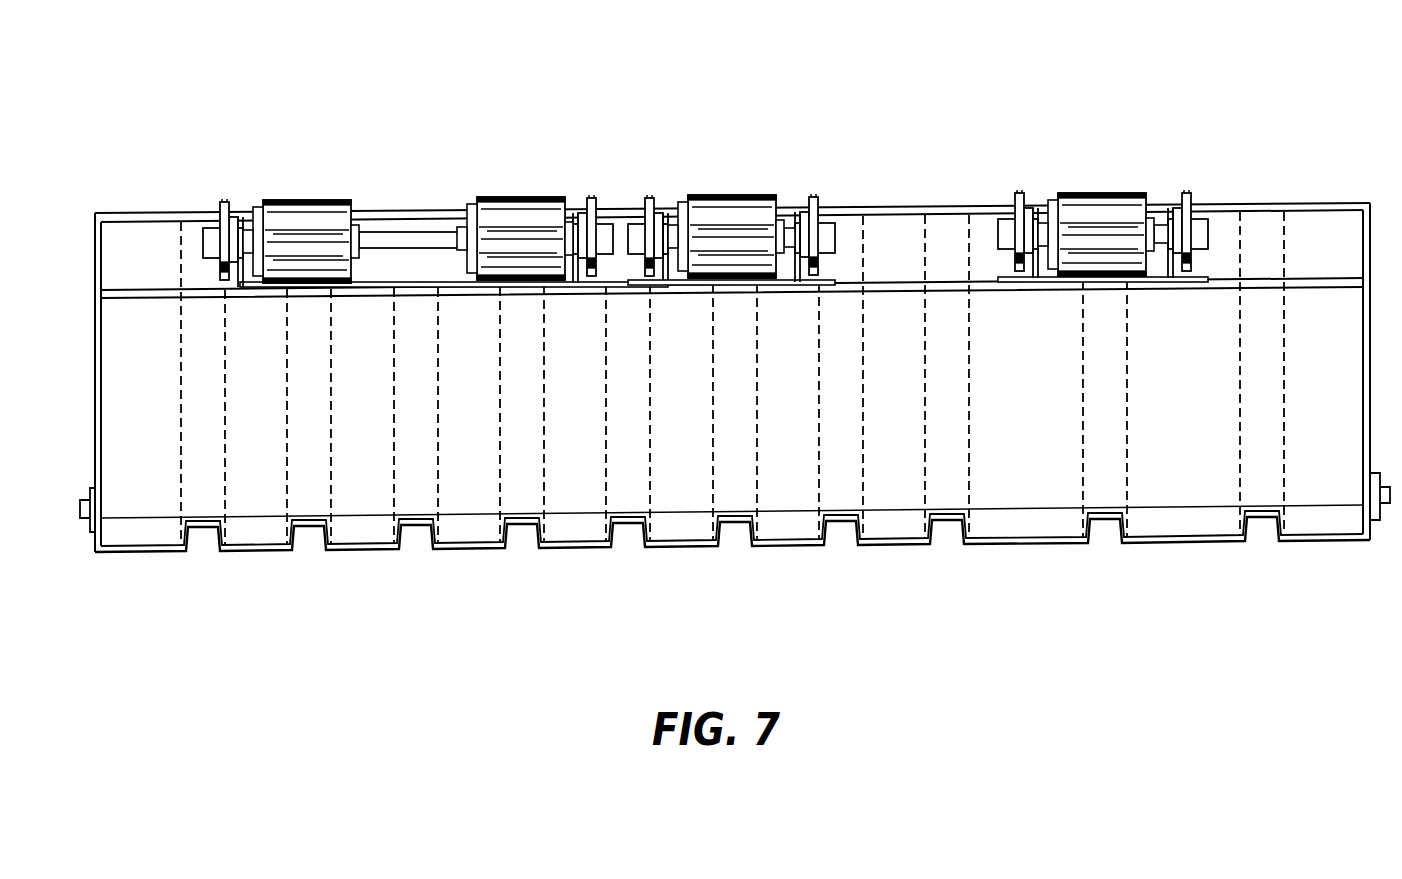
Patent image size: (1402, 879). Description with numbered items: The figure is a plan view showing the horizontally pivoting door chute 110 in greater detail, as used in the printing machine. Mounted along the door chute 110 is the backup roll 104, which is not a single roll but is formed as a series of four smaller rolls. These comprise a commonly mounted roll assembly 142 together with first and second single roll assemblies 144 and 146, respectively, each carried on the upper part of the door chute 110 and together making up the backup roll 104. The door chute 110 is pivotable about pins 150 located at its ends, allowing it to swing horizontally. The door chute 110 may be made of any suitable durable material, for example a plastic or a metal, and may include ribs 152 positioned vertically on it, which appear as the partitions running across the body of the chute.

The backup roll 104 is at (705, 165).
The horizontally pivoting door chute 110 is at (735, 317).
The commonly mounted roll assembly 142 is at (723, 202).
The first single roll assembly 144 is at (602, 192).
The second single roll assembly 146 is at (1093, 200).
The pins 150 is at (1383, 510).
The ribs 152 is at (1078, 490).